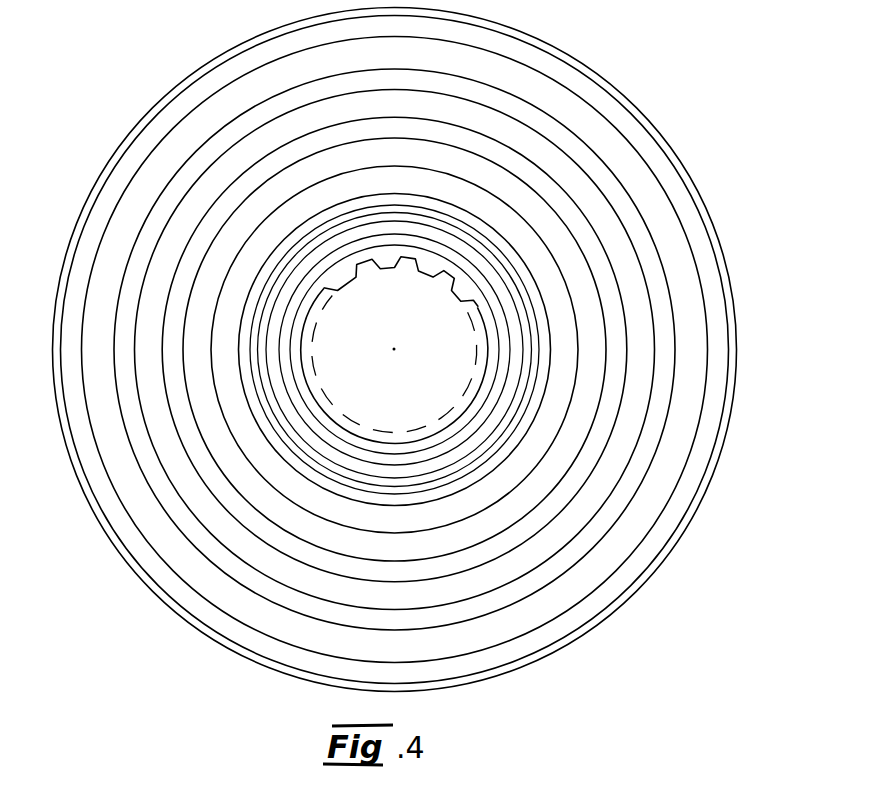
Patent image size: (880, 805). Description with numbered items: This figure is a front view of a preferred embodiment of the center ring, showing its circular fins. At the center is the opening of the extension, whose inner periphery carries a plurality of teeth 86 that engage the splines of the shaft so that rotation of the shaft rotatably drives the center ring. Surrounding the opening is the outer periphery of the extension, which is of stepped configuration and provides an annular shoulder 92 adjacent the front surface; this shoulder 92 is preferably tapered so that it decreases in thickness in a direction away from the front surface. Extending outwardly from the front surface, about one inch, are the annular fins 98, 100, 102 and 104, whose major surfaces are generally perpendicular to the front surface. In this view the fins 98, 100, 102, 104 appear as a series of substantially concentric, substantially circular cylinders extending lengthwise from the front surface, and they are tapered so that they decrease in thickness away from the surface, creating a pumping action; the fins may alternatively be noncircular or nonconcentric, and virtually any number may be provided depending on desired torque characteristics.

The teeth 86 is at (418, 274).
The annular shoulder 92 is at (508, 428).
The annular fin 98 is at (567, 364).
The annular fin 100 is at (608, 295).
The annular fin 102 is at (617, 198).
The annular fin 104 is at (608, 107).